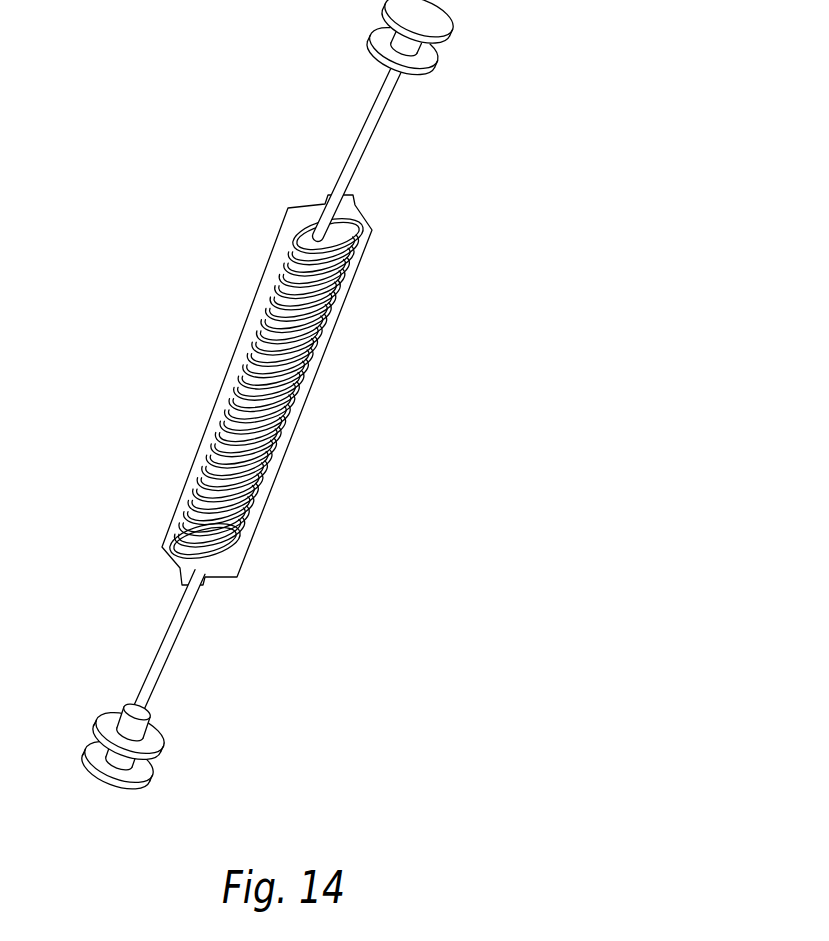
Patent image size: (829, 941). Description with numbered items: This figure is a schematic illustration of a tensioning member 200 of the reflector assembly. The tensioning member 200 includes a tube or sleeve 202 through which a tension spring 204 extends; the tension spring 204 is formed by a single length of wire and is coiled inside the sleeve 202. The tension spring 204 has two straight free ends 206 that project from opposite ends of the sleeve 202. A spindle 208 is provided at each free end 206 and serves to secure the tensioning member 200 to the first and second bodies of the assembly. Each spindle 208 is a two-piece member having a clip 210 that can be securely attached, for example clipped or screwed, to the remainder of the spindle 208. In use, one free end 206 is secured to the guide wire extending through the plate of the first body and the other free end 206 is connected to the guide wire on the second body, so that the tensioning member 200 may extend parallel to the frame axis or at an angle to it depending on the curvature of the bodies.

The tensioning member 200 is at (267, 408).
The tube or sleeve 202 is at (290, 460).
The tension spring 204 is at (315, 332).
The free end 206 is at (372, 138).
The spindle 208 is at (384, 36).
The clip 210 is at (446, 38).